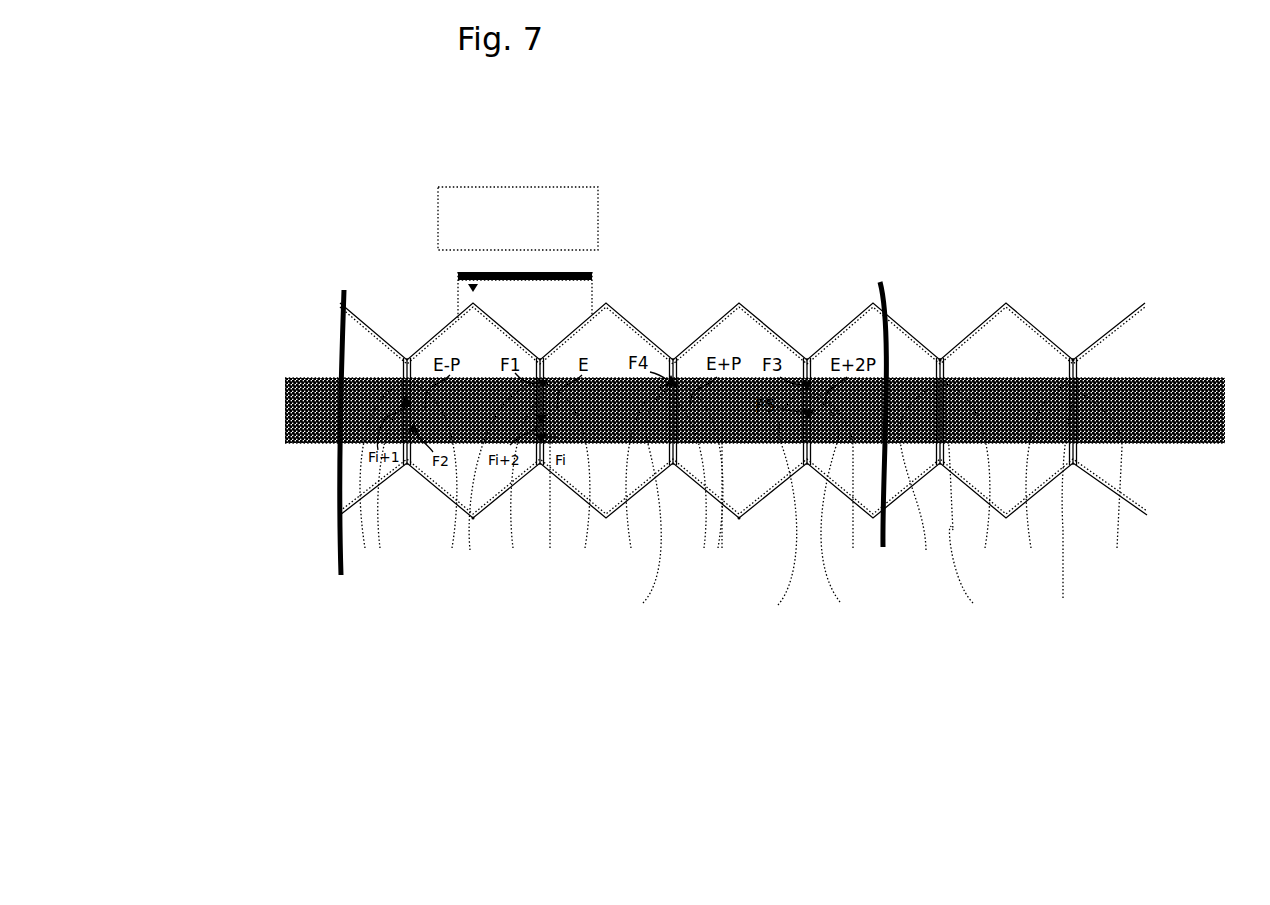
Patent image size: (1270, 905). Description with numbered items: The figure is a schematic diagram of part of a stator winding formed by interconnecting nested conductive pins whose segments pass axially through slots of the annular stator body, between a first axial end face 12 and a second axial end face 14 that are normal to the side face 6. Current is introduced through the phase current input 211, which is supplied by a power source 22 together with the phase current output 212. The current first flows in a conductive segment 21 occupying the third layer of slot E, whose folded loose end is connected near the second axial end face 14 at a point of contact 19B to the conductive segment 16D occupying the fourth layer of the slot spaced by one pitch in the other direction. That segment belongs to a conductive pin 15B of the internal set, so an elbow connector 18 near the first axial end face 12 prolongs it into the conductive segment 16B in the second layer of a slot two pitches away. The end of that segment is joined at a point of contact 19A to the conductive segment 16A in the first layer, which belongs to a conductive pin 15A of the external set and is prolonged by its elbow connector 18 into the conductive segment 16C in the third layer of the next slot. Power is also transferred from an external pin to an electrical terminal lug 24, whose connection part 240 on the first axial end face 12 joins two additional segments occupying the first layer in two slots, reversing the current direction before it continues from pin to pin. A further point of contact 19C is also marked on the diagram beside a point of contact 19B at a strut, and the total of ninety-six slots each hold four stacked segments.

The side face 6 is at (310, 413).
The first axial end face 12 is at (322, 377).
The second axial end face 14 is at (320, 443).
The conductive pin of first set 15A is at (714, 318).
The conductive pin of second set 15B is at (906, 326).
The conductive segment 16A is at (662, 483).
The conductive segment 16B is at (816, 505).
The conductive segment 16C is at (909, 483).
The conductive segment 16D is at (940, 505).
The elbow connector 18 is at (1010, 298).
The point of contact 19A is at (742, 520).
The point of contact 19B is at (773, 455).
The third node 19C is at (968, 370).
The conductive segment 21 is at (628, 492).
The power source 22 is at (526, 230).
The electrical terminal lug 24 is at (448, 488).
The connection part 240 is at (535, 272).
The phase current input 211 is at (470, 264).
The phase current output 212 is at (606, 297).